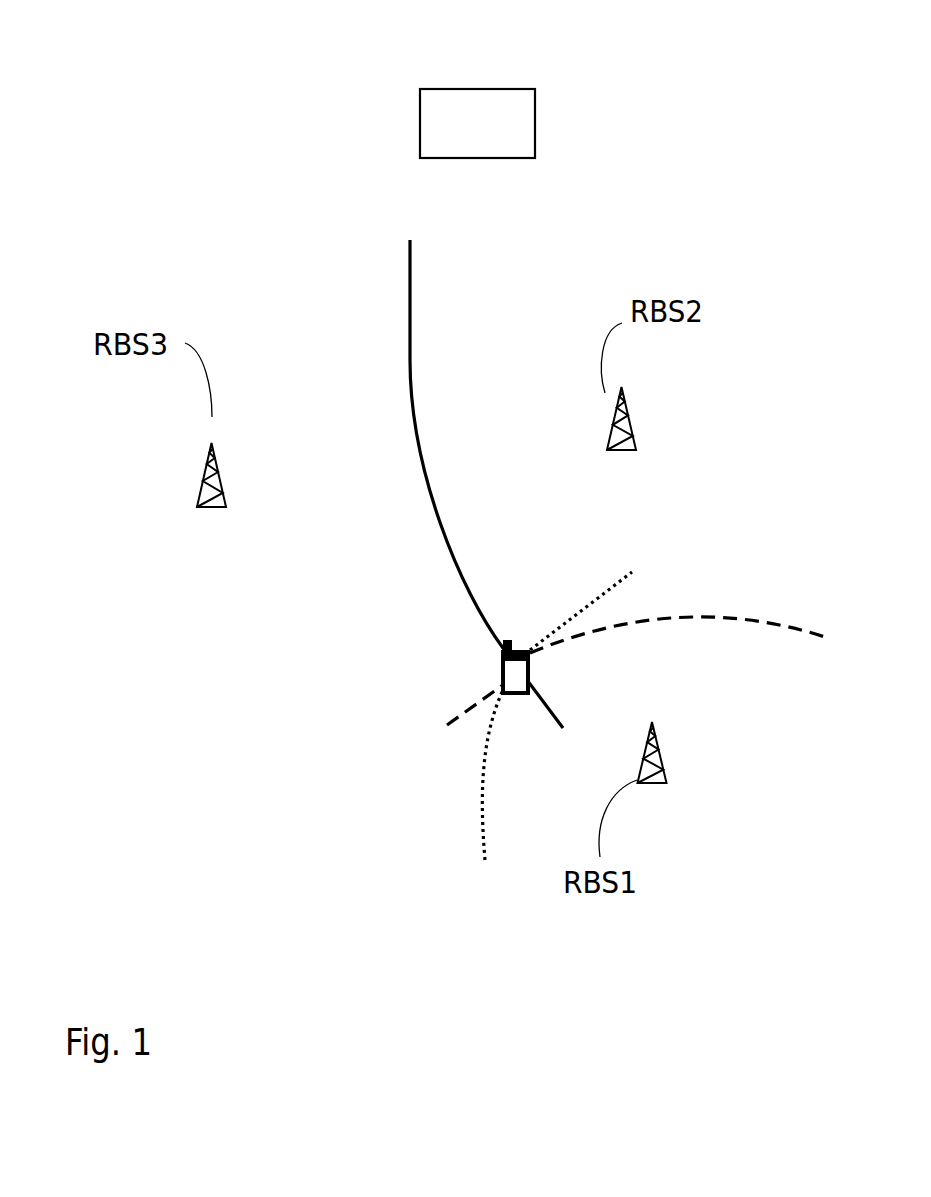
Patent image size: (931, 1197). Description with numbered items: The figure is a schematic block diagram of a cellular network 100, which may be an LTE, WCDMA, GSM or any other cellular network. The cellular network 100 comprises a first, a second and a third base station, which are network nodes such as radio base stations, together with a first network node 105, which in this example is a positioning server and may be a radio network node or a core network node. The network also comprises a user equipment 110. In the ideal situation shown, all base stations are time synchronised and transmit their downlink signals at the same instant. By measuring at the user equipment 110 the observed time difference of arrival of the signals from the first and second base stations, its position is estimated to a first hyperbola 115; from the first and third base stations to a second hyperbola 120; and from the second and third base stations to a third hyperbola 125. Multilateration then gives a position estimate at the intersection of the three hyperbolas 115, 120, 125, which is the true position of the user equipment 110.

The cellular network 100 is at (308, 148).
The first network node 105 is at (495, 110).
The user equipment 110 is at (515, 650).
The first hyperbola 115 is at (693, 618).
The second hyperbola 120 is at (482, 812).
The third hyperbola 125 is at (407, 312).